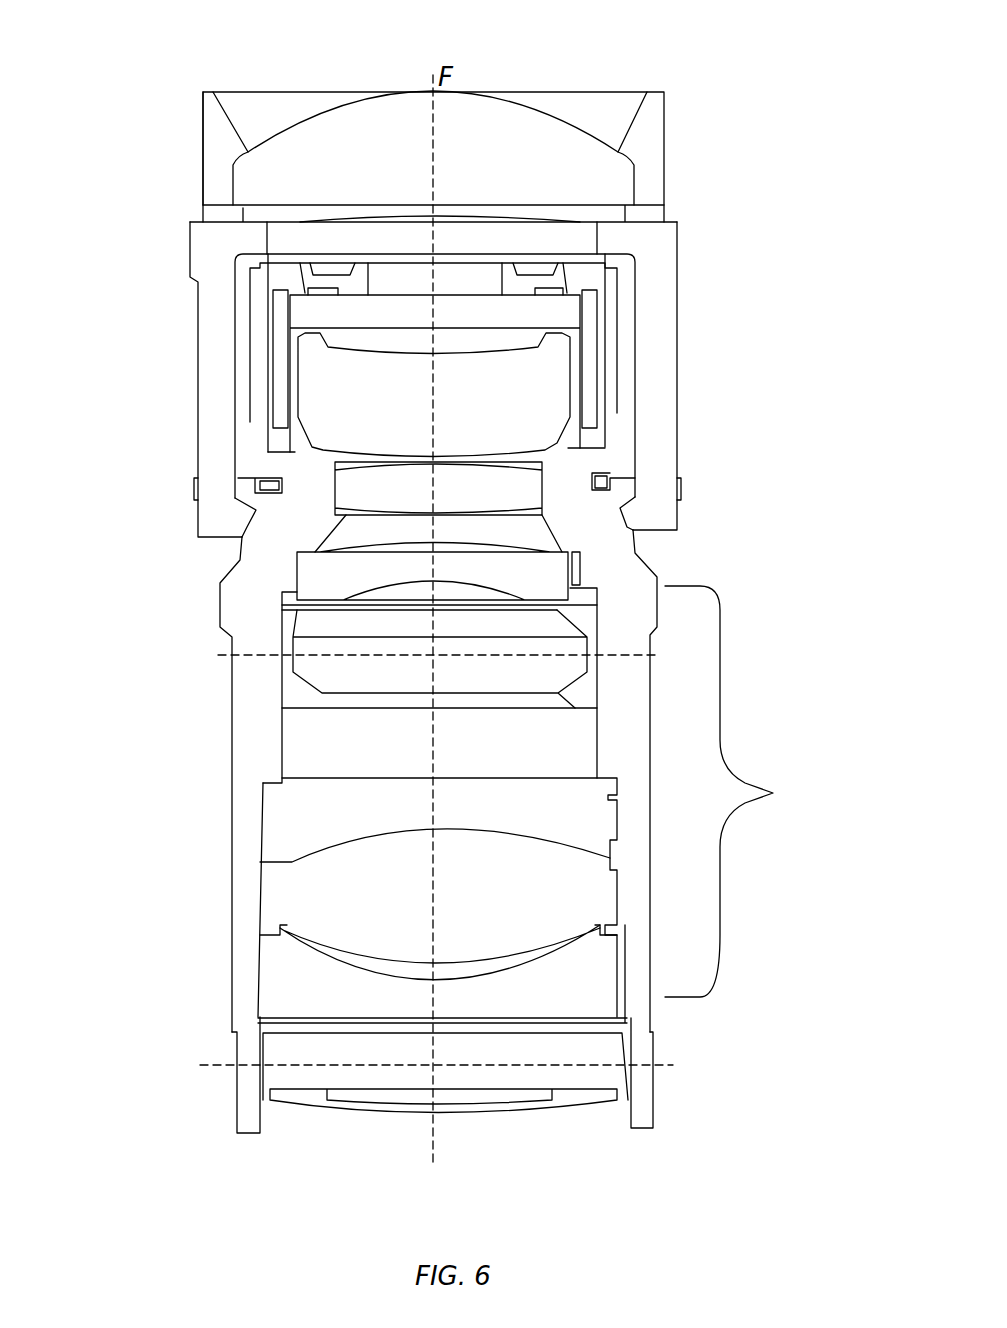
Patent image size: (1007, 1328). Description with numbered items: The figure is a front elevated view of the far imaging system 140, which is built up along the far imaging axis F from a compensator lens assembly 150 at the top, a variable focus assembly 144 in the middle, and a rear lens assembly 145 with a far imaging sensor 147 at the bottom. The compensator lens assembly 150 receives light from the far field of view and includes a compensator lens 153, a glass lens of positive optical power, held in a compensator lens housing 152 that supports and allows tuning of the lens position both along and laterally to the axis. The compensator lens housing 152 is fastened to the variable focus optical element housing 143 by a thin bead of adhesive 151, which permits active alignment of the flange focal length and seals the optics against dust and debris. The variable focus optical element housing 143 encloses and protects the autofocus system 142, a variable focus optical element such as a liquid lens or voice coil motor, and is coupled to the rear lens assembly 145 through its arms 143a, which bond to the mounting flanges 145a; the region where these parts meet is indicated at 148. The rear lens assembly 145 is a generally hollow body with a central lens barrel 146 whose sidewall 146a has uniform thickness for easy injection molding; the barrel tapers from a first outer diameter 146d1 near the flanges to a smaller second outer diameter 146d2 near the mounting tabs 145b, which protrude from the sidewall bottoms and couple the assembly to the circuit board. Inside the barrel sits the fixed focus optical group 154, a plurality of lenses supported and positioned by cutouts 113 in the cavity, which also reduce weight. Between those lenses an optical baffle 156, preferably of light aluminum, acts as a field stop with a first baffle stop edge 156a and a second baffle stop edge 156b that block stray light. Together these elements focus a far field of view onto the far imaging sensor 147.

The far imaging system 140 is at (170, 54).
The compensator lens 153 is at (510, 100).
The compensator lens assembly 150 is at (664, 95).
The compensator lens housing 152 is at (203, 172).
The adhesive 151 is at (664, 212).
The autofocus system 142 is at (617, 318).
The variable focus assembly 144 is at (150, 372).
The variable focus optical element housing 143 is at (677, 445).
The mounting flanges 145a is at (194, 490).
The arms 143a is at (242, 537).
The housing shoulder 148 is at (670, 545).
The first baffle stop edge 156a is at (282, 627).
The first outer diameter 146d1 is at (218, 655).
The optical baffle 156 is at (600, 619).
The rear lens assembly 145 is at (650, 673).
The second baffle stop edge 156b is at (282, 708).
The central lens barrel 146 is at (232, 840).
The sidewall 146a is at (232, 888).
The cutouts 113 is at (272, 915).
The fixed focus optical group 154 is at (632, 795).
The second outer diameter 146d2 is at (235, 1065).
The far imaging sensor 147 is at (580, 1107).
The mounting tabs 145b is at (250, 1135).